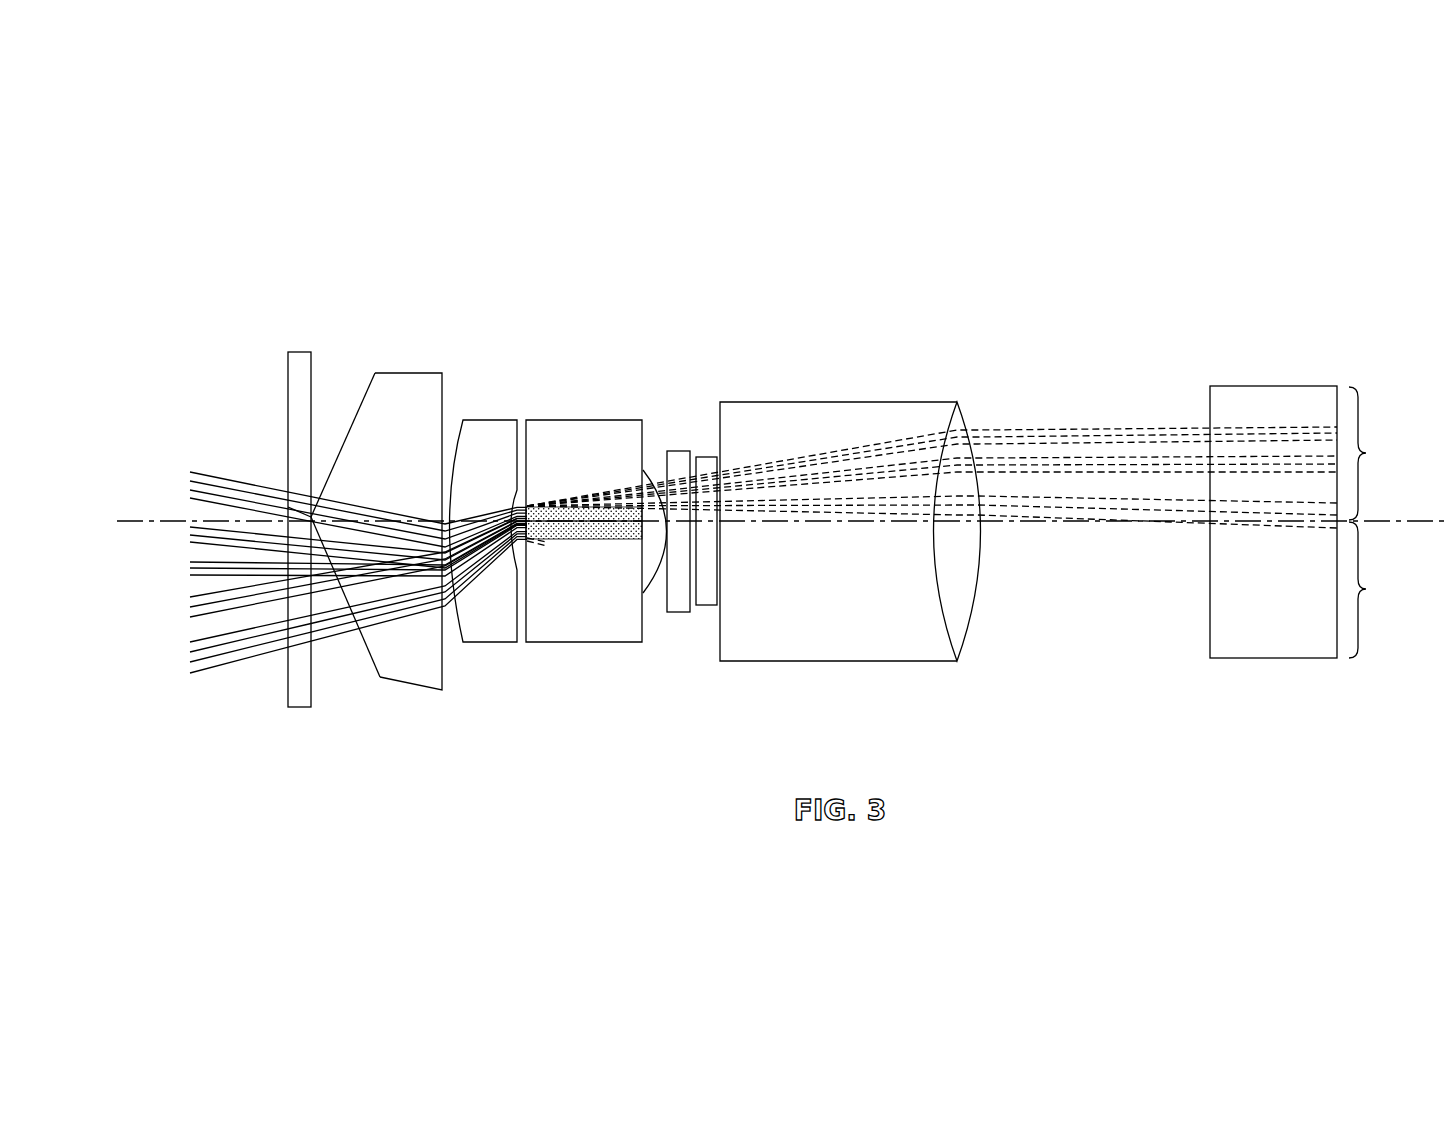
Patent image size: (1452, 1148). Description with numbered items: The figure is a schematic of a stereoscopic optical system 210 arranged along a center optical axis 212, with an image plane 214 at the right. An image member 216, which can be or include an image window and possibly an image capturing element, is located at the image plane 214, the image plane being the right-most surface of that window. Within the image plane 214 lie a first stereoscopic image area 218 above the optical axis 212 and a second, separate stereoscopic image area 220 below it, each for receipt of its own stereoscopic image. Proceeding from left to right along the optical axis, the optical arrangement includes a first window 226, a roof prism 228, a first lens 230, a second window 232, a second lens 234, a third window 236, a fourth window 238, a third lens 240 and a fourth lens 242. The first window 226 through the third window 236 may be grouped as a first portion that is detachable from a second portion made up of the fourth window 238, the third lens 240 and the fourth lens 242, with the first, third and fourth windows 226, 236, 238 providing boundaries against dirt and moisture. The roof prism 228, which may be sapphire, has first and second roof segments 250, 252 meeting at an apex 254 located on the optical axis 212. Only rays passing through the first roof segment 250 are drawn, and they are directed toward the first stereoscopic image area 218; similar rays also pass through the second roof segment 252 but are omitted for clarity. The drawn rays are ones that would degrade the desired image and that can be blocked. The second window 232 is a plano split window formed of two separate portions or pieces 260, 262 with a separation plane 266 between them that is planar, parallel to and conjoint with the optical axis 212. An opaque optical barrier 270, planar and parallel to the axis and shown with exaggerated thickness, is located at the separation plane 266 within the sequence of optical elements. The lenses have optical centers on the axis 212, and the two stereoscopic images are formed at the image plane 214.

The stereoscopic optical system 210 is at (283, 226).
The center optical axis 212 is at (160, 520).
The image plane 214 is at (1350, 380).
The image member 216 is at (1277, 398).
The first stereoscopic image area 218 is at (1383, 453).
The second stereoscopic image area 220 is at (1383, 590).
The first window 226 is at (302, 352).
The roof prism 228 is at (398, 390).
The first lens 230 is at (483, 438).
The second window 232 is at (623, 410).
The second lens 234 is at (660, 555).
The third window 236 is at (678, 580).
The fourth window 238 is at (707, 467).
The third lens 240 is at (825, 418).
The fourth lens 242 is at (945, 587).
The first roof segment 250 is at (365, 652).
The second roof segment 252 is at (363, 398).
The apex 254 is at (285, 507).
The lower block portion 260 is at (550, 630).
The portions of the second window 262 is at (558, 445).
The separation plane 266 is at (597, 517).
The opaque optical barrier 270 is at (573, 540).